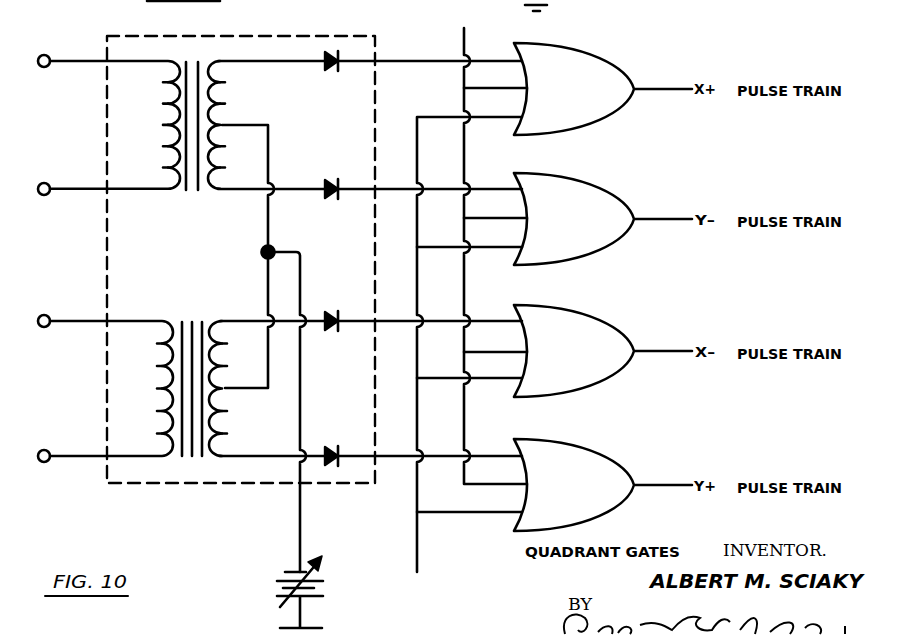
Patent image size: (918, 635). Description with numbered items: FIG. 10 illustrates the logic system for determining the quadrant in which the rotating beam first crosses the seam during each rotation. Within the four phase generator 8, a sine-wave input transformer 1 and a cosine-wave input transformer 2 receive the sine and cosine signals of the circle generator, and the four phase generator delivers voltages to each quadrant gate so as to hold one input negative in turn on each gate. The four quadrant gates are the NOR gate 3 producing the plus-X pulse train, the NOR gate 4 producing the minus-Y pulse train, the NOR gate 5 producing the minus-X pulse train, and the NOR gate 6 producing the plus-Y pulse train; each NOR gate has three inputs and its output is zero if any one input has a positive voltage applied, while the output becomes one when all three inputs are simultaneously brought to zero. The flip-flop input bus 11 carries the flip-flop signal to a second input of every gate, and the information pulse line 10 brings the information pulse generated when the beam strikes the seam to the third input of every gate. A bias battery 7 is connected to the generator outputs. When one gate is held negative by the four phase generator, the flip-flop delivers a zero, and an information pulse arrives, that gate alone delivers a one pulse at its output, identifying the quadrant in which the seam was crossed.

The sine-wave input transformer 1 is at (129, 125).
The cosine-wave input transformer 2 is at (132, 388).
The NOR gate, X+ pulse train 3 is at (603, 89).
The NOR gate, Y- pulse train 4 is at (603, 219).
The NOR gate, X- pulse train 5 is at (603, 351).
The NOR gate, Y+ pulse train 6 is at (603, 485).
The bias battery 7 is at (325, 440).
The four phase generator 8 is at (194, 35).
The information pulse line 10 is at (427, 541).
The flip-flop input bus 11 is at (502, 253).